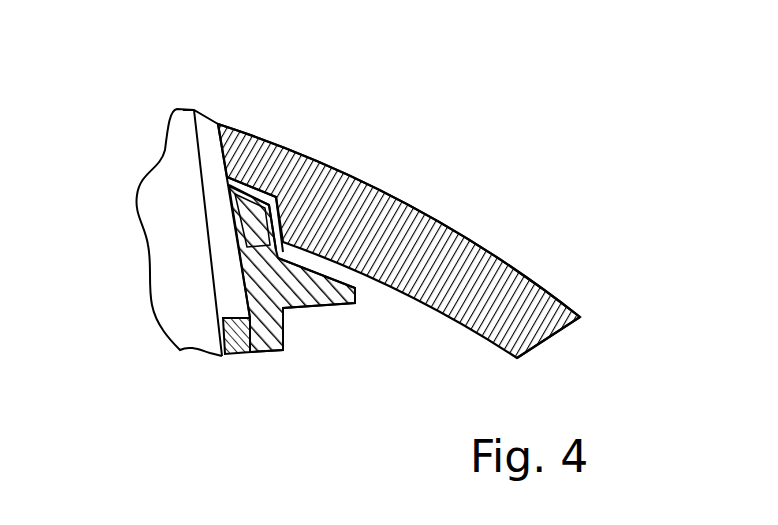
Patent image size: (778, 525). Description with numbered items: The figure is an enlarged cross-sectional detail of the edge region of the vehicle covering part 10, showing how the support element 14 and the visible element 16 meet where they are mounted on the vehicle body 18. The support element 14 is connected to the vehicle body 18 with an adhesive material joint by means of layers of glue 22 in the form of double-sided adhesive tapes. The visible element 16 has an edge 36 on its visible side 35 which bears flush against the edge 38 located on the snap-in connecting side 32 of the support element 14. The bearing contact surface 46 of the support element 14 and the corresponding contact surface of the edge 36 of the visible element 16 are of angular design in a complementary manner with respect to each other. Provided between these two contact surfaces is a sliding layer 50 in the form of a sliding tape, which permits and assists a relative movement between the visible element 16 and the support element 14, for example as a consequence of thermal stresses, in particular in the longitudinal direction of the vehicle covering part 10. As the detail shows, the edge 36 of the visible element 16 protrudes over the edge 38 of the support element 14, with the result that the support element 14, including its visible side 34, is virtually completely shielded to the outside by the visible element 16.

The vehicle covering part 10 is at (486, 184).
The support element 14 is at (250, 280).
The visible element 16 is at (537, 285).
The vehicle body 18 is at (167, 190).
The layers of glue 22 is at (237, 355).
The snap-in connecting side 32 is at (372, 313).
The visible side 34 is at (303, 318).
The visible side 35 is at (363, 161).
The edge on the visible side 36 is at (219, 110).
The edge on the snap-in connecting side 38 is at (247, 214).
The bearing contact surface 46 is at (243, 238).
The sliding layer 50 is at (259, 178).